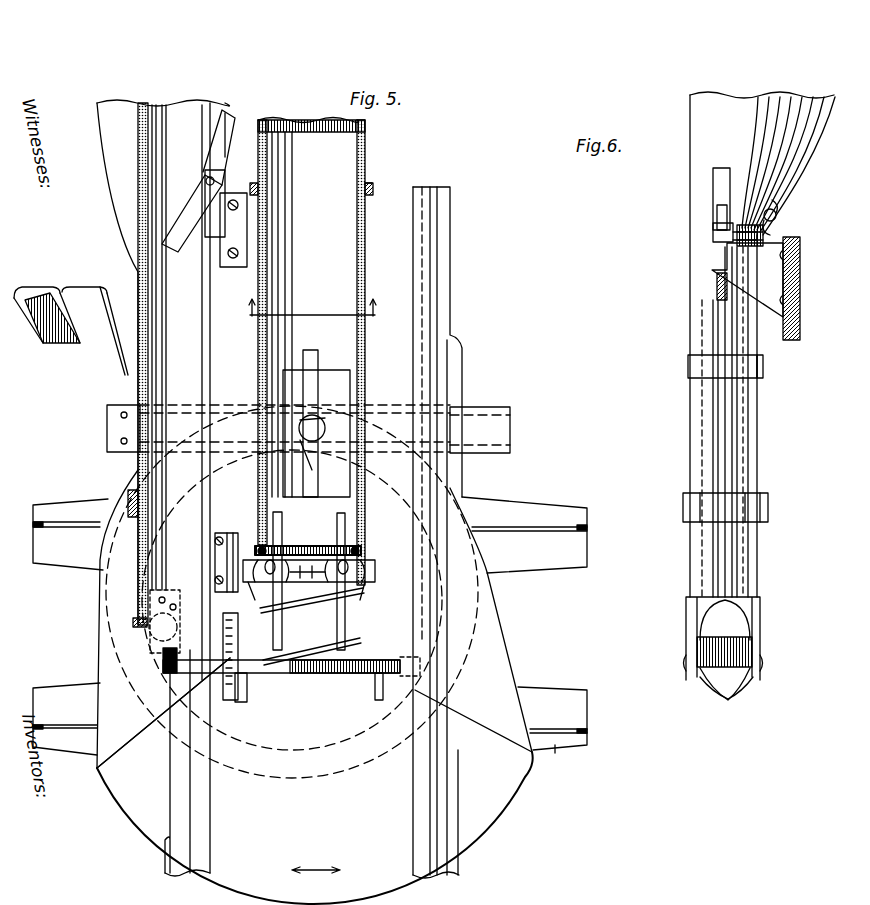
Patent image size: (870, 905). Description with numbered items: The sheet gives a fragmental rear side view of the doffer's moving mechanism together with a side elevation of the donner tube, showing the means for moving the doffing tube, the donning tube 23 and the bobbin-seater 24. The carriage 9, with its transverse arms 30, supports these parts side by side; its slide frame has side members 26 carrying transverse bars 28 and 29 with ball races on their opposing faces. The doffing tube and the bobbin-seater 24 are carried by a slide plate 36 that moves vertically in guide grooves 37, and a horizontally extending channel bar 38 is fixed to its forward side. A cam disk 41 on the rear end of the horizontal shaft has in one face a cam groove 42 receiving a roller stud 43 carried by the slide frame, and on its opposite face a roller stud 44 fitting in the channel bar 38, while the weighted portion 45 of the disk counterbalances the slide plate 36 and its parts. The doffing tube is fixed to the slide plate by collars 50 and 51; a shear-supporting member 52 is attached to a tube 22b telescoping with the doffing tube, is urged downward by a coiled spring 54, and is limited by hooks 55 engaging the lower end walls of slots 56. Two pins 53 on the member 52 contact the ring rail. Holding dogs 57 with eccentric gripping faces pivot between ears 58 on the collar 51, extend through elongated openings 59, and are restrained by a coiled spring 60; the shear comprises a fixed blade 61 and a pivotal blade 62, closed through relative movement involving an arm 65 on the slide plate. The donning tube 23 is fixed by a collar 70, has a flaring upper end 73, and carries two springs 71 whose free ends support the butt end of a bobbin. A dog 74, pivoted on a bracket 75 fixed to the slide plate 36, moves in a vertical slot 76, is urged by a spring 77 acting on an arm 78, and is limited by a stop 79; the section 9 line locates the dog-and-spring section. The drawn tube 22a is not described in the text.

In FIG. 5, the carriage 9 is at (310, 313).
In FIG. 5, the standard column 22a is at (358, 293).
In FIG. 5, the telescoping tube 22b is at (358, 635).
In FIG. 6, the donning tube 23 is at (690, 435).
In FIG. 5, the bobbin-seater 24 is at (18, 300).
In FIG. 5, the side members 26 is at (185, 790).
In FIG. 5, the transverse bar 28 is at (520, 505).
In FIG. 5, the transverse bar 29 is at (565, 750).
In FIG. 5, the transverse arms 30 is at (548, 560).
In FIG. 5, the slide plate 36 is at (398, 190).
In FIG. 6, the slide plate 36 is at (800, 295).
In FIG. 5, the guide grooves 37 is at (427, 245).
In FIG. 5, the channel bar 38 is at (505, 435).
In FIG. 5, the cam disk 41 is at (507, 648).
In FIG. 5, the cam groove 42 is at (110, 600).
In FIG. 5, the roller stud 43 is at (160, 630).
In FIG. 5, the roller stud 44 is at (360, 400).
In FIG. 5, the weighted portion 45 is at (468, 828).
In FIG. 5, the collar 50 is at (370, 190).
In FIG. 5, the collar 51 is at (366, 575).
In FIG. 5, the shear-supporting member 52 is at (330, 673).
In FIG. 5, the pins 53 is at (243, 703).
In FIG. 5, the coiled spring 54 is at (343, 613).
In FIG. 5, the hooks 55 is at (308, 495).
In FIG. 5, the slots 56 is at (318, 375).
In FIG. 5, the holding dogs 57 is at (258, 584).
In FIG. 5, the ears 58 is at (258, 556).
In FIG. 5, the elongated openings 59 is at (345, 530).
In FIG. 5, the coiled spring 60 is at (362, 552).
In FIG. 5, the fixed blade 61 is at (233, 668).
In FIG. 5, the pivotal blade 62 is at (175, 680).
In FIG. 5, the arm 65 is at (228, 535).
In FIG. 6, the collar 70 is at (688, 362).
In FIG. 6, the springs 71 is at (726, 696).
In FIG. 6, the flaring upper end 73 is at (805, 130).
In FIG. 5, the dog 74 is at (176, 232).
In FIG. 6, the dog 74 is at (715, 283).
In FIG. 5, the bracket 75 is at (228, 195).
In FIG. 6, the bracket 75 is at (747, 280).
In FIG. 5, the vertical slot 76 is at (210, 345).
In FIG. 6, the vertical slot 76 is at (725, 390).
In FIG. 6, the spring 77 is at (750, 225).
In FIG. 6, the arm 78 is at (778, 218).
In FIG. 5, the stop 79 is at (222, 135).
In FIG. 6, the stop 79 is at (713, 212).